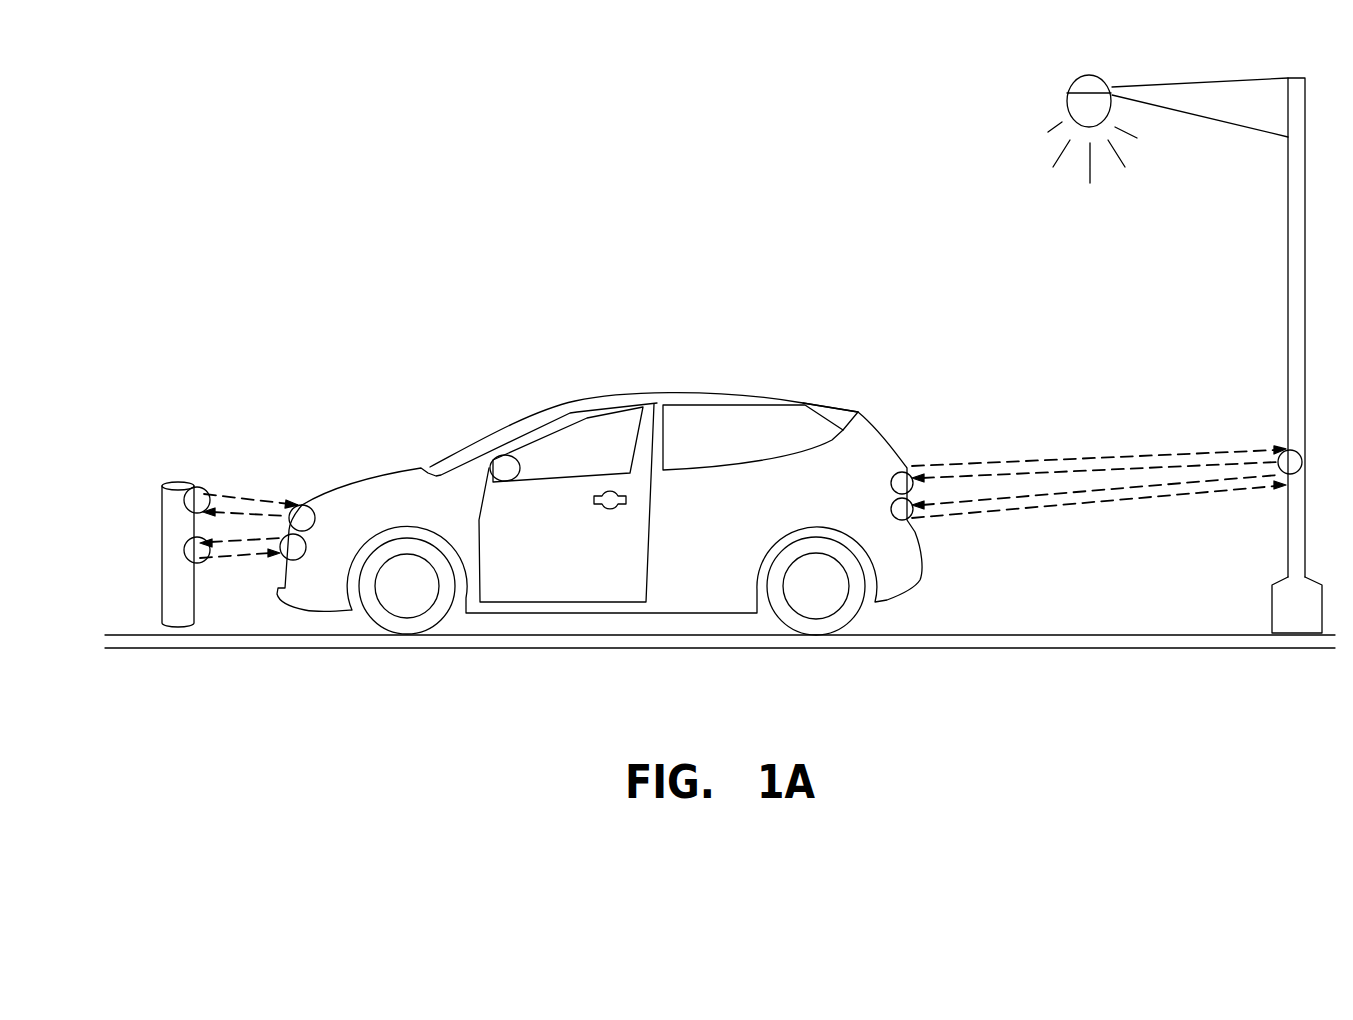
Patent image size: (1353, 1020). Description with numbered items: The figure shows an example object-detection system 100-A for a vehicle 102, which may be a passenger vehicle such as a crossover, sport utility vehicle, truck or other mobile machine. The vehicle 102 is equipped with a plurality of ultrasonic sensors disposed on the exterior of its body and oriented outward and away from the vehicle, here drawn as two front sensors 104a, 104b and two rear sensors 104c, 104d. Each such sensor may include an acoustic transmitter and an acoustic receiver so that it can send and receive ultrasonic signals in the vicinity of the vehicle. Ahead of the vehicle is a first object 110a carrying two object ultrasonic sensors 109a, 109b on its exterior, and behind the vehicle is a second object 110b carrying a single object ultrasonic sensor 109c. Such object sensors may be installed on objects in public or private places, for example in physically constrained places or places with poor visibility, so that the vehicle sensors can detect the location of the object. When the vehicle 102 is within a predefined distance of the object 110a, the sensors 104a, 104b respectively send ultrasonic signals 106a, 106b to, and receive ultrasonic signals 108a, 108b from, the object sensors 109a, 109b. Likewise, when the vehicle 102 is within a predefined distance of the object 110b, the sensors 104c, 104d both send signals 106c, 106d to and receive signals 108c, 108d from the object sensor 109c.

The object-detection system 100-A is at (366, 198).
The vehicle 102 is at (627, 390).
The ultrasonic sensor 104a is at (307, 506).
The ultrasonic sensor 104b is at (297, 560).
The ultrasonic sensor 104c is at (913, 467).
The ultrasonic sensor 104d is at (912, 522).
The sent ultrasonic signal 106a is at (253, 502).
The sent ultrasonic signal 106b is at (250, 560).
The sent ultrasonic signal 106c is at (1083, 460).
The sent ultrasonic signal 106d is at (997, 521).
The received ultrasonic signal 108a is at (240, 495).
The received ultrasonic signal 108b is at (222, 558).
The received ultrasonic signal 108c is at (1130, 470).
The received ultrasonic signal 108d is at (1127, 490).
The object ultrasonic sensor 109a is at (192, 486).
The object ultrasonic sensor 109b is at (190, 556).
The object ultrasonic sensor 109c is at (1286, 451).
The object 110a is at (162, 529).
The object 110b is at (1288, 282).